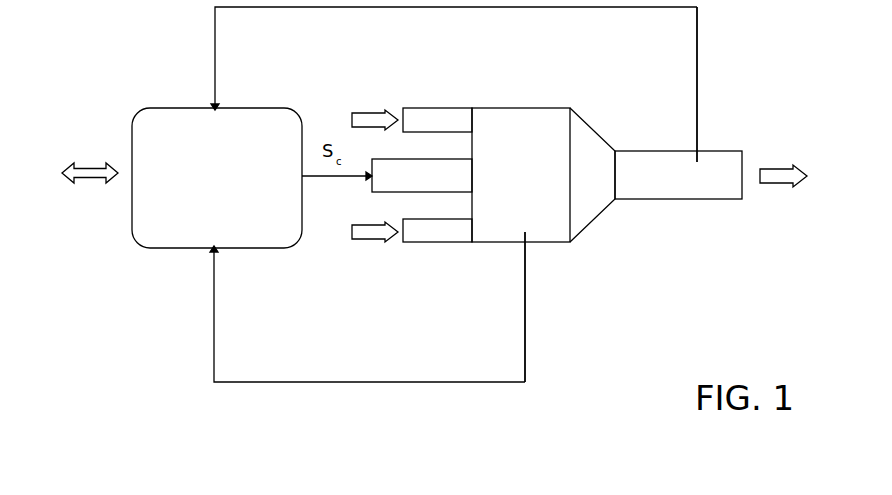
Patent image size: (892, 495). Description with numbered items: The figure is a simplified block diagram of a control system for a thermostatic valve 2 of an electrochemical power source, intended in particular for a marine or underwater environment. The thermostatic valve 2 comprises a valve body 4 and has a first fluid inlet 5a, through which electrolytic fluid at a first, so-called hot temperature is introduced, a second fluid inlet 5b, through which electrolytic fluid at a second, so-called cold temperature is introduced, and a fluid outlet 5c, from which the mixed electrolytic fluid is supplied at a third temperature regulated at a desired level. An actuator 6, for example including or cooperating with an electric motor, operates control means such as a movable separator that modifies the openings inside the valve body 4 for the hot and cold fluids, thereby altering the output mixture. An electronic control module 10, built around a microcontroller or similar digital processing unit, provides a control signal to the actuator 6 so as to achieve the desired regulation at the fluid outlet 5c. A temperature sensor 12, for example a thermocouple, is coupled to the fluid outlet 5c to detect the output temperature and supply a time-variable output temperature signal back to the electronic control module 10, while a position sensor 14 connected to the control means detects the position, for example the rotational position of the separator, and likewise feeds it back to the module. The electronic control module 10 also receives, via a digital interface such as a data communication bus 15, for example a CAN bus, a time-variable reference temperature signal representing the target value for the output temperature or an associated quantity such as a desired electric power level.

The thermostatic valve 2 is at (500, 102).
The valve body 4 is at (537, 118).
The first fluid inlet 5a is at (433, 118).
The second fluid inlet 5b is at (428, 236).
The fluid outlet 5c is at (678, 190).
The actuator 6 is at (378, 186).
The electronic control module 10 is at (274, 116).
The temperature sensor 12 is at (700, 148).
The position sensor 14 is at (530, 248).
The data communication bus 15 is at (88, 183).